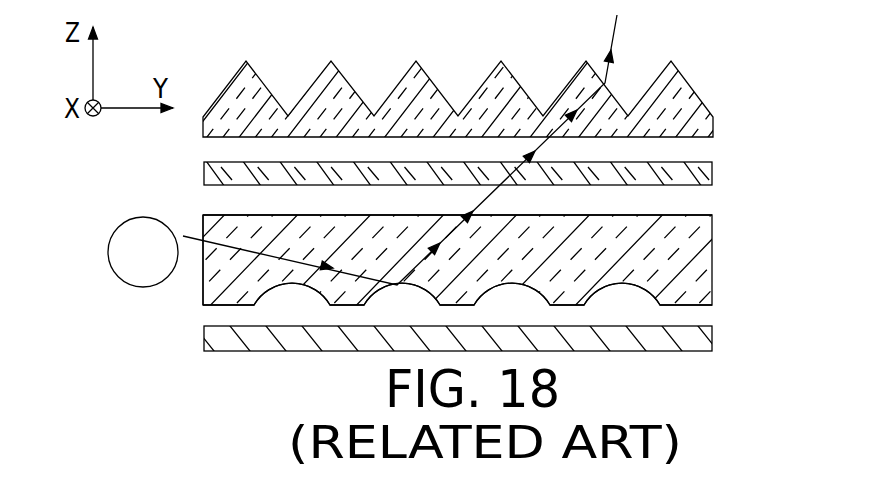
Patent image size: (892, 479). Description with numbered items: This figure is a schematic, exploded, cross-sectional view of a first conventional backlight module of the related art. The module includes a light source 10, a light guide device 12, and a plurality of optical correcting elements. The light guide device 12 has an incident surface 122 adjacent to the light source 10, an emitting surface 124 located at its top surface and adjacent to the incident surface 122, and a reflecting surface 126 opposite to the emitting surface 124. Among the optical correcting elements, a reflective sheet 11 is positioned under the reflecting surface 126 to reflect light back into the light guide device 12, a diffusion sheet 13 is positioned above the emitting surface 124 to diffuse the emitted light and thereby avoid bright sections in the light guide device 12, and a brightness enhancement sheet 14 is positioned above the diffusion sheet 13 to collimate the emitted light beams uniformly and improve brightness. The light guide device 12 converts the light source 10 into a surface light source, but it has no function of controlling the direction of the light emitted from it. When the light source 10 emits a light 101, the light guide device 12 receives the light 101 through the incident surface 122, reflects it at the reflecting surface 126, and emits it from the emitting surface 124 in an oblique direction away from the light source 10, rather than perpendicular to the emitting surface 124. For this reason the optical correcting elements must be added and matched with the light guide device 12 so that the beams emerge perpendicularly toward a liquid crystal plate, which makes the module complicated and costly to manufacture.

The light source 10 is at (132, 252).
The light 101 is at (203, 238).
The reflective sheet 11 is at (700, 342).
The light guide device 12 is at (688, 258).
The incident surface 122 is at (203, 283).
The emitting surface 124 is at (688, 214).
The reflecting surface 126 is at (698, 307).
The diffusion sheet 13 is at (690, 173).
The brightness enhancement sheet 14 is at (680, 105).